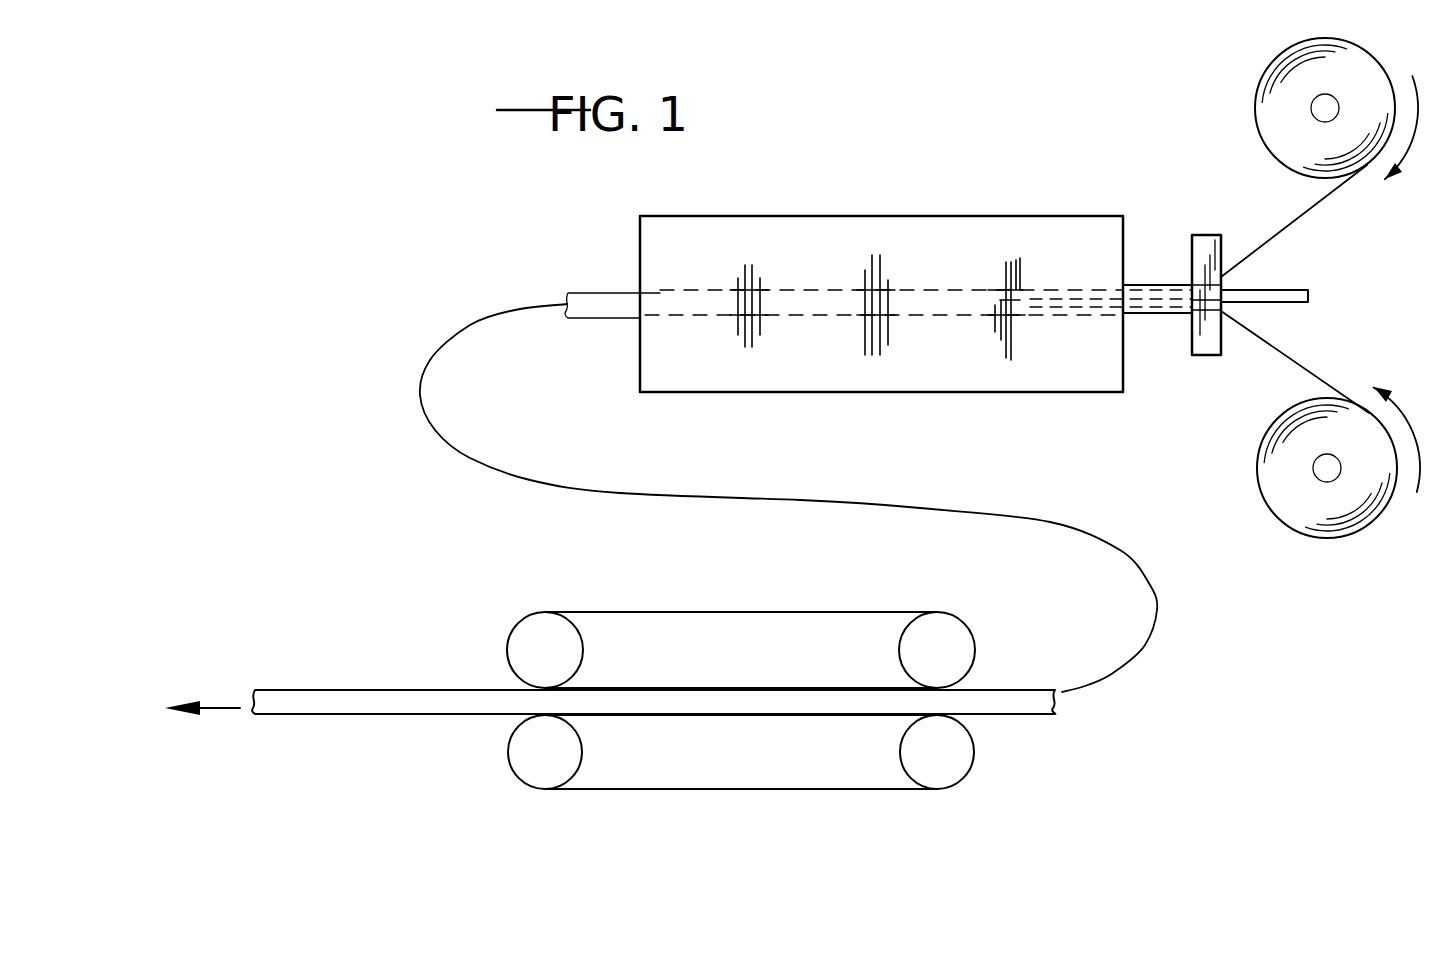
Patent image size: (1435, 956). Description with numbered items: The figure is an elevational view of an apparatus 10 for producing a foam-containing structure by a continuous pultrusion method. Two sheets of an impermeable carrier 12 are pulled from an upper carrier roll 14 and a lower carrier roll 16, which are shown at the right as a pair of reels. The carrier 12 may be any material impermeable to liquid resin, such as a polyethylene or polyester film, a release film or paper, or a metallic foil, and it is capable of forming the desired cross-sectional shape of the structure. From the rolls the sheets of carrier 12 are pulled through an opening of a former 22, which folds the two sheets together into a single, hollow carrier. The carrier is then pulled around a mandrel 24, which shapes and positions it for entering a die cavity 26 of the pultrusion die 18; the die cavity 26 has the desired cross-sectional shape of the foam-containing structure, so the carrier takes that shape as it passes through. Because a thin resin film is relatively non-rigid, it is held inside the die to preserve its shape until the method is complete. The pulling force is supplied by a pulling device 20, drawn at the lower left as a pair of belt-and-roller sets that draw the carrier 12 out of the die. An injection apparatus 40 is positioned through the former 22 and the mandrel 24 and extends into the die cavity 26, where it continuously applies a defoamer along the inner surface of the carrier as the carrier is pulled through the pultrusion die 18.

The apparatus 10 is at (525, 222).
The impermeable carrier 12 is at (1295, 357).
The upper carrier roll 14 is at (1290, 88).
The lower carrier roll 16 is at (1320, 512).
The pultrusion die 18 is at (878, 233).
The pulling device 20 is at (720, 789).
The former 22 is at (1207, 234).
The mandrel 24 is at (1160, 314).
The die cavity 26 is at (800, 296).
The injection apparatus 40 is at (1140, 288).